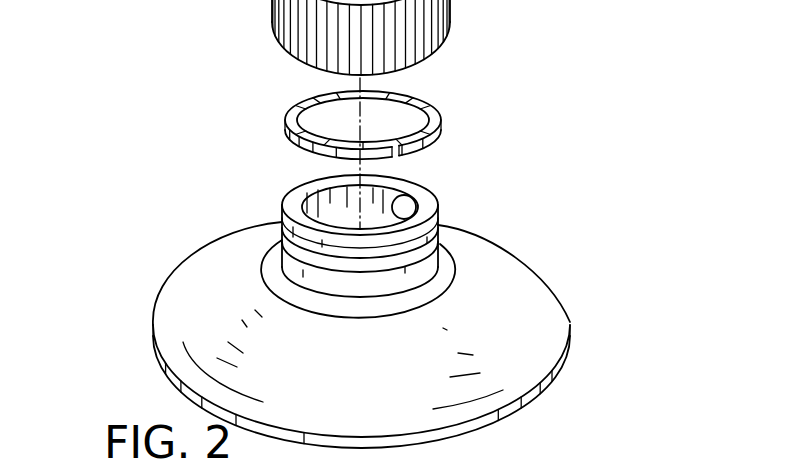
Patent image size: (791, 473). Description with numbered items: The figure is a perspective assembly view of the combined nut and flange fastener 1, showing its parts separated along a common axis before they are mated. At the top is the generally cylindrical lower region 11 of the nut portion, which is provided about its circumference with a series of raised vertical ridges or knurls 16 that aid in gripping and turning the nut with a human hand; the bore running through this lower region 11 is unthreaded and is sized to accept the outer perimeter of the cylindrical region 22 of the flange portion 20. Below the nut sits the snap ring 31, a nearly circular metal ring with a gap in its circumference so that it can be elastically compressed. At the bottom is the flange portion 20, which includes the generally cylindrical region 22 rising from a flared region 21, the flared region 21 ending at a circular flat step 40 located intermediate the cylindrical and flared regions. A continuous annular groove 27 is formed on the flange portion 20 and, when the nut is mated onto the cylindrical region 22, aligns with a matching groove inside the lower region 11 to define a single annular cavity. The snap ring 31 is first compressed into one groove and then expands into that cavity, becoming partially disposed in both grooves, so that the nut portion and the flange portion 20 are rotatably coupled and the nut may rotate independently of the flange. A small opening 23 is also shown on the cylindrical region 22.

The combined nut and flange fastener 1 is at (152, 50).
The lower region 11 is at (452, 21).
The knurls 16 is at (277, 50).
The snap ring 31 is at (442, 109).
The flange portion 20 is at (573, 252).
The flared region 21 is at (222, 270).
The cylindrical region 22 is at (279, 224).
The vent hole 23 is at (414, 197).
The annular groove 27 is at (418, 261).
The circular flat step 40 is at (430, 288).